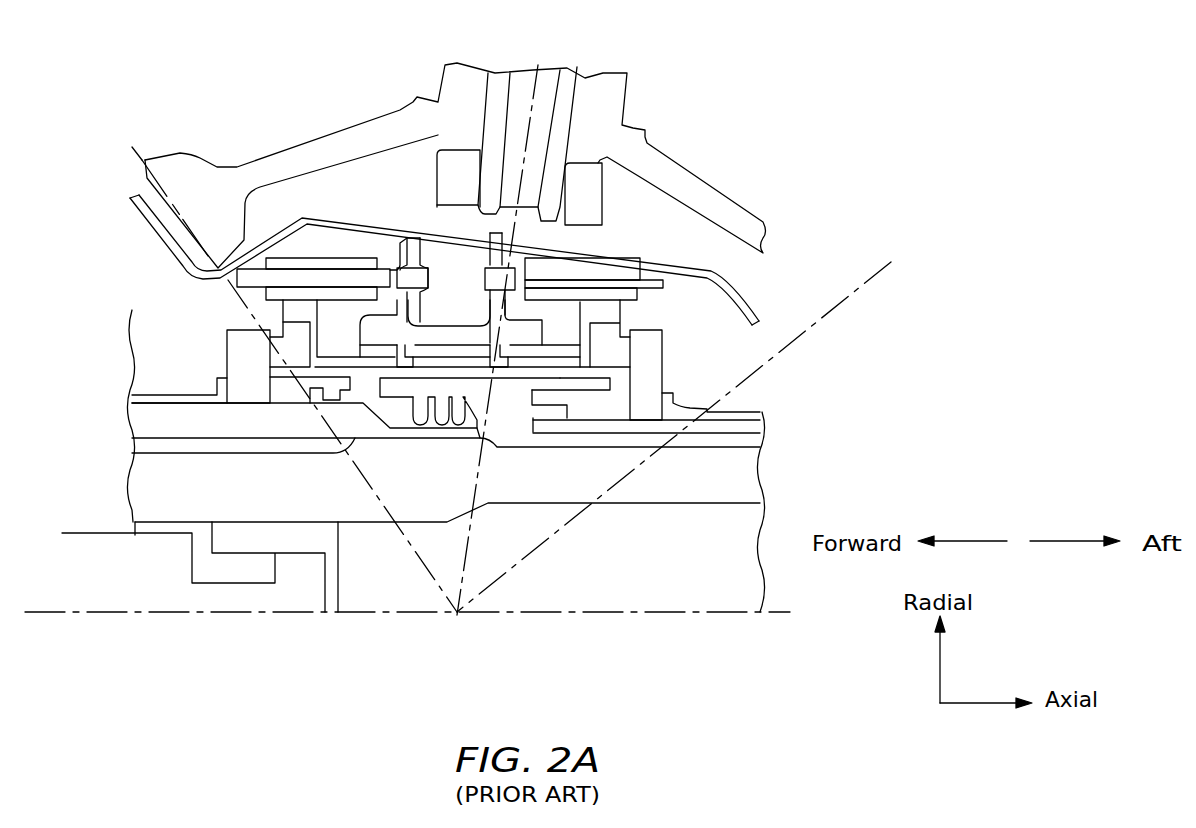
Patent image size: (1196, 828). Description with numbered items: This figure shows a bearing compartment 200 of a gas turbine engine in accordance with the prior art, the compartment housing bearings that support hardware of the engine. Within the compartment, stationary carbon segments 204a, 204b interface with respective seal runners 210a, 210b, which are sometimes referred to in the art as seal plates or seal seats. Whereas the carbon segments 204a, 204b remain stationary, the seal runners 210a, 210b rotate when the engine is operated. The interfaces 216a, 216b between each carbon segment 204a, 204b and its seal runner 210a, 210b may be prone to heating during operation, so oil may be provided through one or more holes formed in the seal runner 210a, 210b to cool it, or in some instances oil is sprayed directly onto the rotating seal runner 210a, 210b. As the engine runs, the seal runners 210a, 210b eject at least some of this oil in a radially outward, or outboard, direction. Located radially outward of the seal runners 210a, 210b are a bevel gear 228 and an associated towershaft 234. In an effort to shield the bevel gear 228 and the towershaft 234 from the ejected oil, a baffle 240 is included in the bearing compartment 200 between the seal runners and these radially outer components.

The bearing compartment 200 is at (843, 120).
The bevel gear 228 is at (200, 172).
The towershaft 234 is at (563, 122).
The baffle 240 is at (362, 225).
The stationary carbon segment 204a is at (293, 343).
The stationary carbon segment 204b is at (603, 350).
The seal runner 210a is at (250, 378).
The seal runner 210b is at (655, 345).
The interface 216a is at (270, 349).
The interface 216b is at (637, 347).